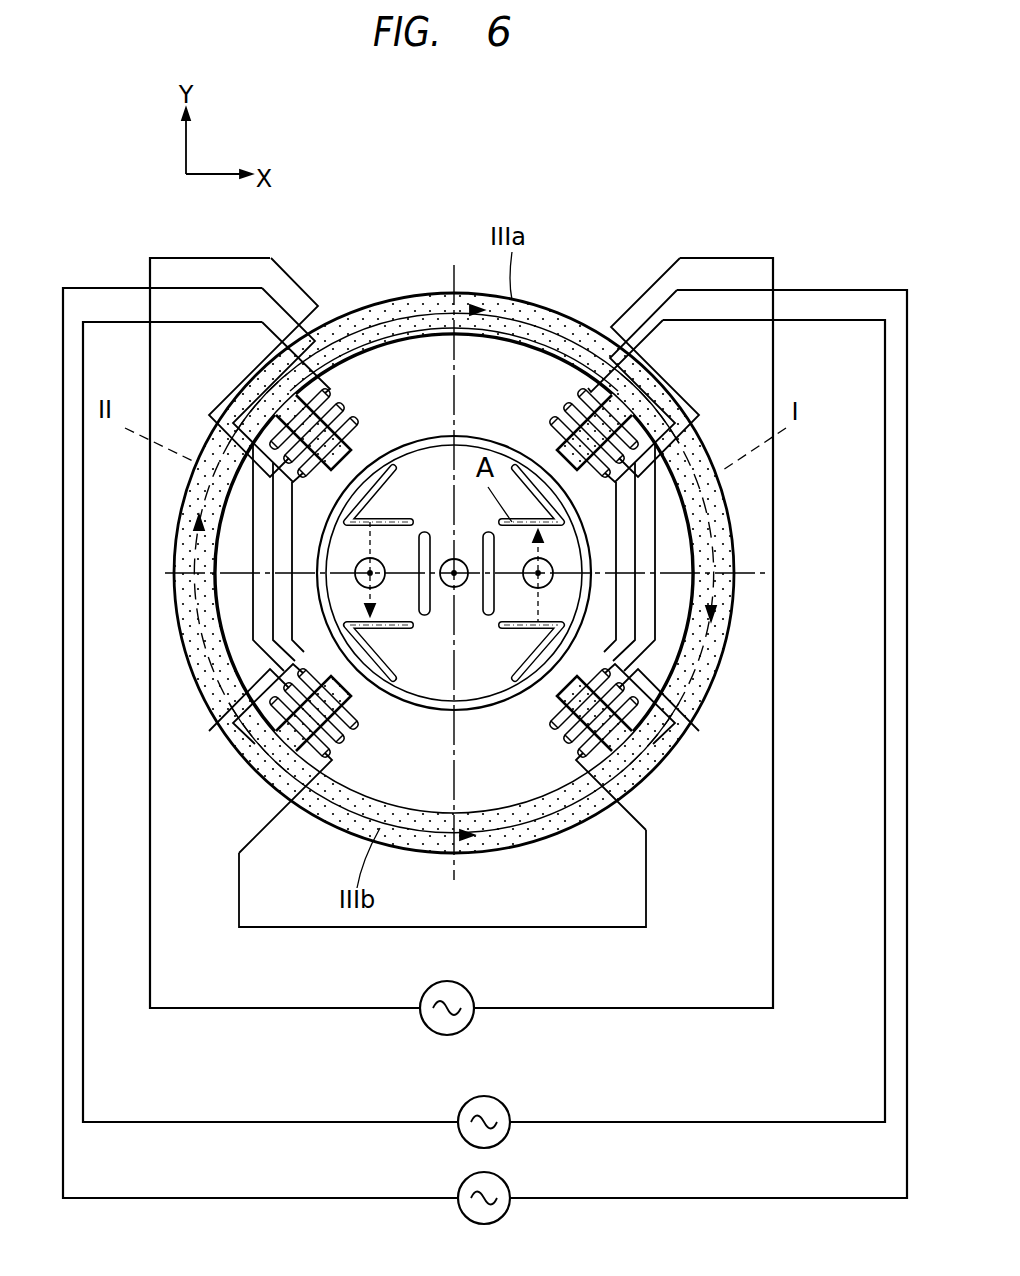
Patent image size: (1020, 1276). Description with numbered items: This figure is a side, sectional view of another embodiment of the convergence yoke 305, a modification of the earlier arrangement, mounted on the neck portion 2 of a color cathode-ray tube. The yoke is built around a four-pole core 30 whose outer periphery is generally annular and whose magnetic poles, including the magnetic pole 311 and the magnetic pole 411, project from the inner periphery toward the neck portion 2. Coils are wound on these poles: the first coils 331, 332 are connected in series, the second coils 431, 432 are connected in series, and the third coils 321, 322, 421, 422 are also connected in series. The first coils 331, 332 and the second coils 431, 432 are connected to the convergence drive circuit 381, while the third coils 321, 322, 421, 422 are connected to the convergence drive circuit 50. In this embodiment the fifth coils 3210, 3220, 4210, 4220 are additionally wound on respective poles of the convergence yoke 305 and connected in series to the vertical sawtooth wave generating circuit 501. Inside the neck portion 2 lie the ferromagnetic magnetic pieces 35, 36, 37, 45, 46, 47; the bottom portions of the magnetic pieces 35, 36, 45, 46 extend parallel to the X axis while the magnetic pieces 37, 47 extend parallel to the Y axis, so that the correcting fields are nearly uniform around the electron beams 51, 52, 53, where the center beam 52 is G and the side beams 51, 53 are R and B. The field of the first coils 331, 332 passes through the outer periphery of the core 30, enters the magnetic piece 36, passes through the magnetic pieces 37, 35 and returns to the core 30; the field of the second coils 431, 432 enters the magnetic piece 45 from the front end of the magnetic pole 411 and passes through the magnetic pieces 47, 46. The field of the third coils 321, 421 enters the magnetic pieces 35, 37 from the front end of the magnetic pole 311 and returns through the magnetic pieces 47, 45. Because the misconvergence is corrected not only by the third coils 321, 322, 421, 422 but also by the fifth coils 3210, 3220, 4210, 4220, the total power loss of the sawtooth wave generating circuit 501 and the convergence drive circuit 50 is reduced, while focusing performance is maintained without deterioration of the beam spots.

The neck portion 2 is at (470, 715).
The four-pole core 30 is at (405, 292).
The convergence yoke 305 is at (578, 282).
The magnetic piece 35 is at (510, 470).
The magnetic piece 36 is at (515, 672).
The magnetic piece 37 is at (486, 542).
The magnetic piece 45 is at (390, 468).
The magnetic piece 46 is at (393, 672).
The magnetic piece 47 is at (424, 535).
The convergence drive circuit 50 is at (470, 990).
The electron beam R 51 is at (540, 577).
The center electron beam G 52 is at (452, 560).
The electron beam B 53 is at (368, 573).
The magnetic pole 311 is at (550, 388).
The third coil 321 is at (640, 440).
The first coil 331 is at (620, 395).
The third coil 322 is at (635, 735).
The first coil 332 is at (625, 722).
The convergence drive circuit 381 is at (510, 1198).
The magnetic pole 411 is at (330, 380).
The third coil 421 is at (285, 420).
The second coil 431 is at (310, 372).
The third coil 422 is at (283, 752).
The second coil 432 is at (285, 740).
The vertical sawtooth wave generating circuit 501 is at (510, 1120).
The fifth coil 3210 is at (688, 503).
The fifth coil 3220 is at (567, 727).
The fifth coil 4210 is at (275, 455).
The fifth coil 4220 is at (283, 683).